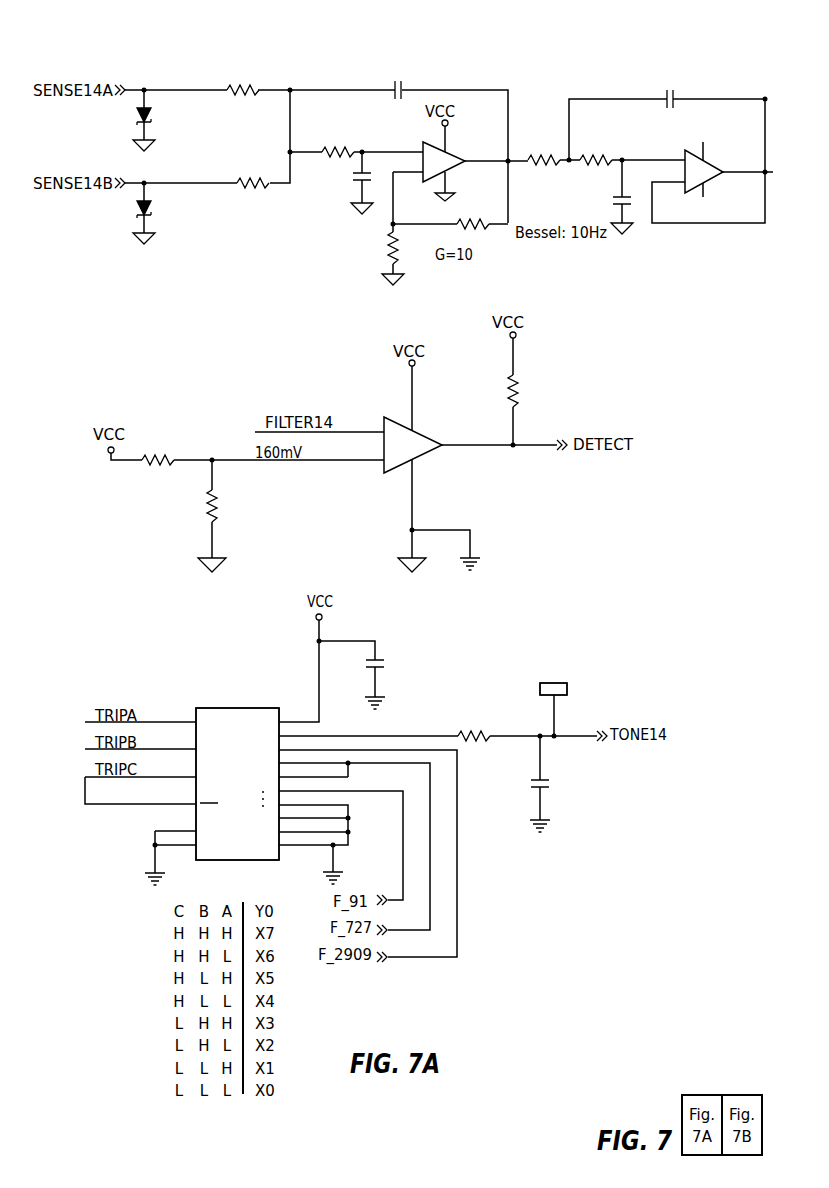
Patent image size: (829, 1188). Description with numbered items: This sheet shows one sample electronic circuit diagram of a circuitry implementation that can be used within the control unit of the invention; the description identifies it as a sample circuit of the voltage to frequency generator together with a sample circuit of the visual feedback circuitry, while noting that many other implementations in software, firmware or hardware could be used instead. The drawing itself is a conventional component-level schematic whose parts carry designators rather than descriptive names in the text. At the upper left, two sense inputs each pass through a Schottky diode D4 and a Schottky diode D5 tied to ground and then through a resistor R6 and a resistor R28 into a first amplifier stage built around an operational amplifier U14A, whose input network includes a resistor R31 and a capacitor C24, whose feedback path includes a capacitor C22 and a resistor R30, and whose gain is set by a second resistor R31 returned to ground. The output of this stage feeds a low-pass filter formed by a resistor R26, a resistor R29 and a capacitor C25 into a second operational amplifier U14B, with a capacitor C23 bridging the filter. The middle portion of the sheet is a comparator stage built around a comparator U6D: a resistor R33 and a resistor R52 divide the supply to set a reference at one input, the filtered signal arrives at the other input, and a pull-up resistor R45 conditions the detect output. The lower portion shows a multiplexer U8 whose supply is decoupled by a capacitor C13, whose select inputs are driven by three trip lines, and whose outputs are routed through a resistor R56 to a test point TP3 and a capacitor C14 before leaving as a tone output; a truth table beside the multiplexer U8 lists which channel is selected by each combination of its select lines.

The Schottky diode D4 SS13 D4 is at (164, 110).
The Schottky diode D5 SS13 D5 is at (164, 203).
The resistor R6 53.6K R6 is at (242, 88).
The resistor R28 53.6K R28 is at (252, 181).
The resistors R31 30.9K and 887 R31 is at (374, 189).
The capacitor C22 .15uF C22 is at (395, 90).
The capacitor C24 1uF C24 is at (347, 181).
The op-amp U14A MCP6044 U14A is at (456, 155).
The resistor R30 8.06K R30 is at (480, 225).
The resistor R26 1.24K R26 is at (543, 162).
The resistor R29 53.6K R29 is at (594, 161).
The capacitor C25 .68uF C25 is at (603, 204).
The capacitor C23 2.2uF C23 is at (683, 96).
The op-amp U14B MCP6044 U14B is at (713, 191).
The resistor R33 10K R33 is at (160, 460).
The resistor R52 330 R52 is at (233, 506).
The comparator U6D LM339A U6D is at (420, 449).
The resistor R45 10K R45 is at (528, 393).
The multiplexer U8 74HC4051 U8 is at (235, 770).
The capacitor C13 1uF C13 is at (394, 668).
The resistor R56 27K R56 is at (478, 737).
The test point TP3 is at (550, 689).
The capacitor C14 .01uF C14 is at (564, 784).